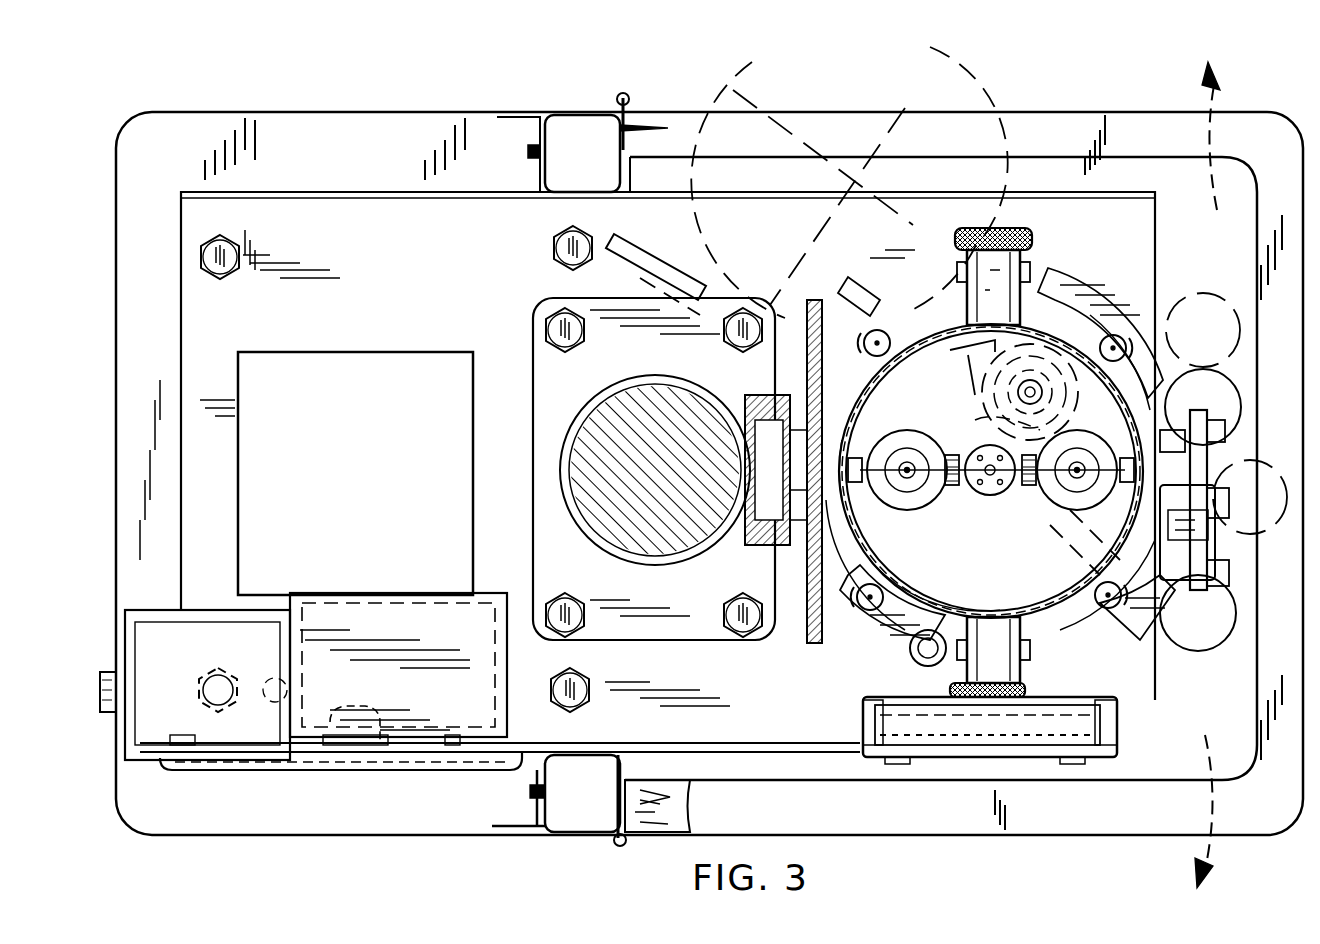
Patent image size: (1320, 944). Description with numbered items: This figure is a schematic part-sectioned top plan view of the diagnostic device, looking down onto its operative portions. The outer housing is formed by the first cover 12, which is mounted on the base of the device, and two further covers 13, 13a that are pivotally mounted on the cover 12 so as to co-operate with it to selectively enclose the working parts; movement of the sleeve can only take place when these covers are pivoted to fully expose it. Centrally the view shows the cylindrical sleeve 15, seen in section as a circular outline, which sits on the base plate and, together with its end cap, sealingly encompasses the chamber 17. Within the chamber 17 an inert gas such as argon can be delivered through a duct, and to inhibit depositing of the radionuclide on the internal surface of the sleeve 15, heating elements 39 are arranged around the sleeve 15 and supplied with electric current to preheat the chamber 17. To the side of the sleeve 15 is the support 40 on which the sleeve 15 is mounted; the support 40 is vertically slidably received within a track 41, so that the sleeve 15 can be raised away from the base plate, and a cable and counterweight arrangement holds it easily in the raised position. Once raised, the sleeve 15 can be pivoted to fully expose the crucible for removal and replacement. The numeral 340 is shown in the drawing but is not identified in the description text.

The first cover 12 is at (701, 469).
The further cover 13 is at (1236, 118).
The further cover 13a is at (1290, 820).
The cylindrical sleeve 15 is at (930, 605).
The chamber 17 is at (1000, 544).
The heating elements 39 is at (872, 328).
The support 40 is at (712, 392).
The track 41 is at (772, 546).
The gear 340 is at (982, 390).